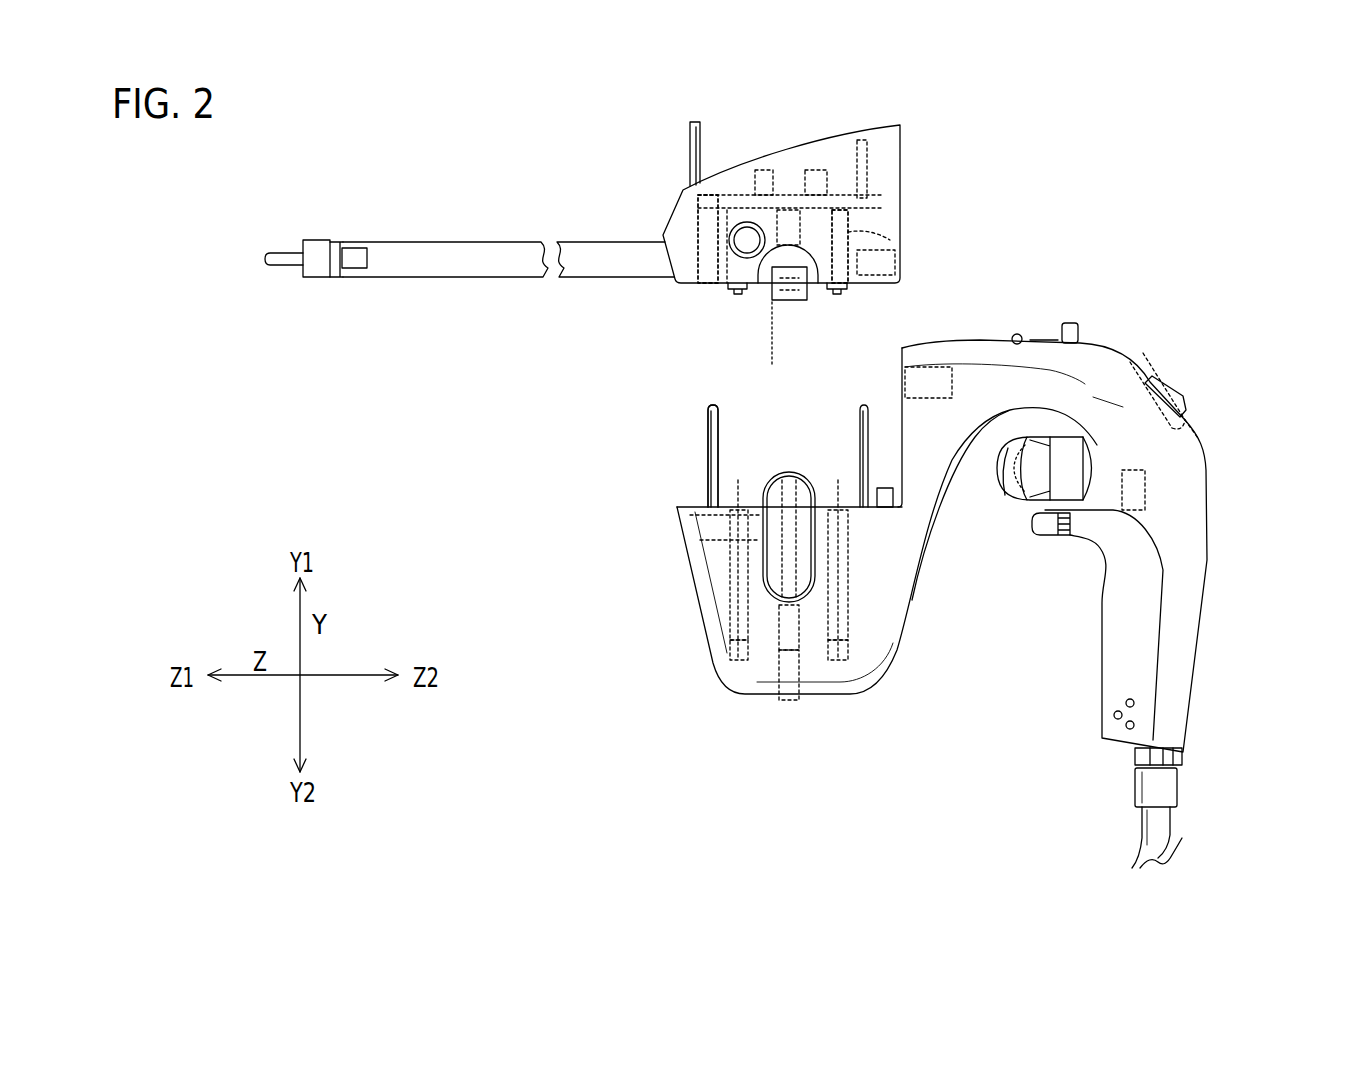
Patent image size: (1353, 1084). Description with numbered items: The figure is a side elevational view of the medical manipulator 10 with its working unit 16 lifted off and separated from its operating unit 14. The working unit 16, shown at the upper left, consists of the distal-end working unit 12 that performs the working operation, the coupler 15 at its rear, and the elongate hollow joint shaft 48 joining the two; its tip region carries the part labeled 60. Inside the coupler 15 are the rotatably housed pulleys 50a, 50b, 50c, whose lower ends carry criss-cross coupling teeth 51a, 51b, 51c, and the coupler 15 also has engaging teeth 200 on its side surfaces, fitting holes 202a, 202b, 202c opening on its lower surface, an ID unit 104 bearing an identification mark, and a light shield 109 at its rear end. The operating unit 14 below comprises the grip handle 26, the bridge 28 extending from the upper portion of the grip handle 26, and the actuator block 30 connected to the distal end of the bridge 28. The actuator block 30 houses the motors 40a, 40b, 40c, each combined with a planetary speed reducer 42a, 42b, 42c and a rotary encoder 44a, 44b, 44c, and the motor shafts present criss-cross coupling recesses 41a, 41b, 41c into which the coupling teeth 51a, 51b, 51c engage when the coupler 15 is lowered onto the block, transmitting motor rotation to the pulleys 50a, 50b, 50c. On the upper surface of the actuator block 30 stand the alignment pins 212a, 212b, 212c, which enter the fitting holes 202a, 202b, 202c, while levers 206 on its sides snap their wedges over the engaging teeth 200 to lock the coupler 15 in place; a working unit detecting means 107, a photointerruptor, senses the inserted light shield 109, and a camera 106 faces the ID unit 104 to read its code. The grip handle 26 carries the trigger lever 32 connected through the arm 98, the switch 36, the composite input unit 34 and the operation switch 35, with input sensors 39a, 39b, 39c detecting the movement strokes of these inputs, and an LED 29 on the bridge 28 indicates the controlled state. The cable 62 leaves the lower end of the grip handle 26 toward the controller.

The manipulator 10 is at (158, 167).
The distal-end working unit 12 is at (342, 219).
The operating unit 14 is at (1190, 356).
The coupler 15 is at (842, 157).
The working unit 16 is at (672, 118).
The grip handle 26 is at (1185, 632).
The bridge 28 is at (1045, 341).
The LED 29 is at (1021, 333).
The actuator block 30 is at (703, 588).
The trigger lever 32 is at (1005, 497).
The composite input unit 34 is at (1178, 391).
The operation switch 35 is at (1071, 322).
The switch 36 is at (1040, 537).
The input sensor 39a is at (1196, 427).
The input sensor 39b is at (1132, 360).
The input sensor 39c is at (1145, 470).
The motor 40a is at (848, 618).
The motor 40b is at (771, 650).
The motor 40c is at (730, 628).
The coupling recess 41a is at (838, 480).
The coupling recess 41b is at (790, 478).
The coupling recess 41c is at (738, 480).
The speed reducer 42a is at (848, 546).
The speed reducer 42b is at (677, 505).
The speed reducer 42c is at (700, 540).
The rotary encoder 44a is at (855, 655).
The rotary encoder 44b is at (795, 700).
The rotary encoder 44c is at (730, 655).
The joint shaft 48 is at (466, 242).
The pulley 50a is at (892, 238).
The pulley 50b is at (818, 288).
The pulley 50c is at (682, 230).
The coupling tooth 51a is at (847, 294).
The coupling tooth 51b is at (772, 350).
The coupling tooth 51c is at (739, 294).
The tip 60 is at (282, 268).
The cable 62 is at (1162, 820).
The arm 98 is at (1075, 465).
The ID unit 104 is at (878, 160).
The camera 106 is at (922, 360).
The working unit detecting means 107 is at (887, 510).
The light shield 109 is at (905, 262).
The engaging tooth 200 is at (803, 300).
The fitting hole 202a is at (712, 286).
The fitting hole 202b is at (708, 239).
The fitting hole 202c is at (862, 290).
The lever 206 is at (770, 556).
The alignment pin 212a is at (717, 390).
The alignment pin 212b is at (713, 456).
The alignment pin 212c is at (866, 403).